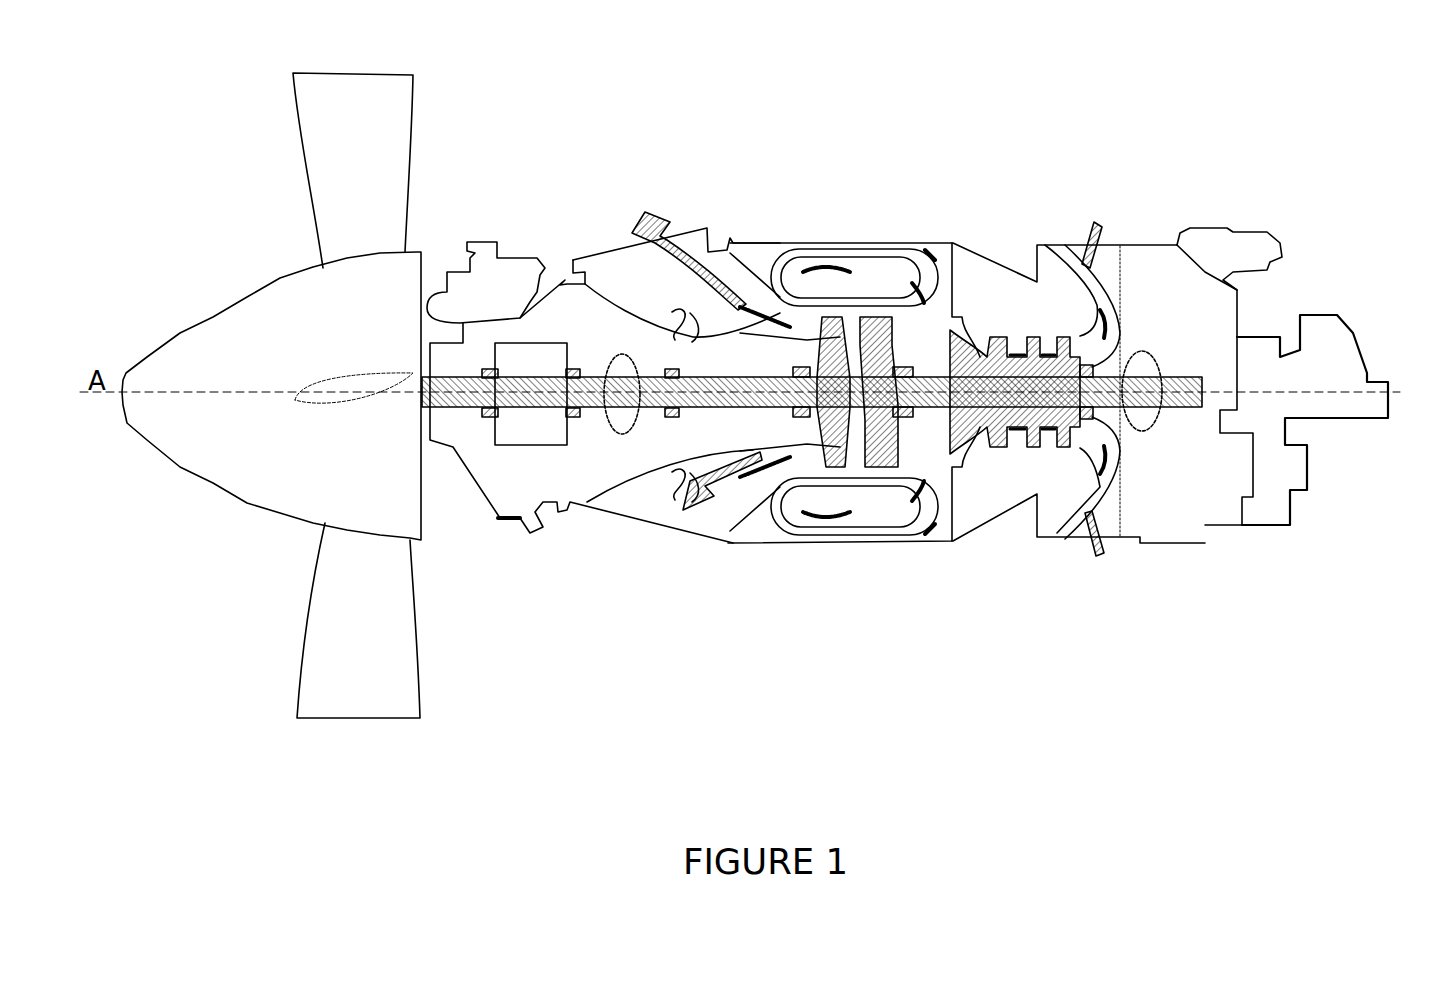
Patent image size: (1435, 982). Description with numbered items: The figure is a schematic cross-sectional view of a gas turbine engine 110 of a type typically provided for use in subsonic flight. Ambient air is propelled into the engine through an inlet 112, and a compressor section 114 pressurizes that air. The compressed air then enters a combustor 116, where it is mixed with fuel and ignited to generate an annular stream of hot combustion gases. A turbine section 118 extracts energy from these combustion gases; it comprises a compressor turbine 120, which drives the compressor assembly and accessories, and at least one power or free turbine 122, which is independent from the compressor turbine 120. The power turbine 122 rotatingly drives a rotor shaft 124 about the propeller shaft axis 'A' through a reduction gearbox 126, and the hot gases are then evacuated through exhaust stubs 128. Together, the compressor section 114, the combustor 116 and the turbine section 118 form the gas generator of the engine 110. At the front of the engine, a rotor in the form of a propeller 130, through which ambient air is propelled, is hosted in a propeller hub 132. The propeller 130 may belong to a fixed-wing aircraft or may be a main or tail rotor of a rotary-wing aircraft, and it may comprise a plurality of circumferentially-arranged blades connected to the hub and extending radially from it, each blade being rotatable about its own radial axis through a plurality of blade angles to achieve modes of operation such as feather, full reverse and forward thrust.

The gas turbine engine 110 is at (770, 154).
The inlet 112 is at (1098, 228).
The compressor section 114 is at (990, 287).
The combustor 116 is at (883, 277).
The turbine section 118 is at (857, 405).
The compressor turbine 120 is at (903, 407).
The power turbine 122 is at (860, 395).
The rotor shaft 124 is at (548, 433).
The reduction gearbox 126 is at (530, 392).
The exhaust stubs 128 is at (628, 224).
The propeller 130 is at (325, 145).
The propeller hub 132 is at (250, 308).